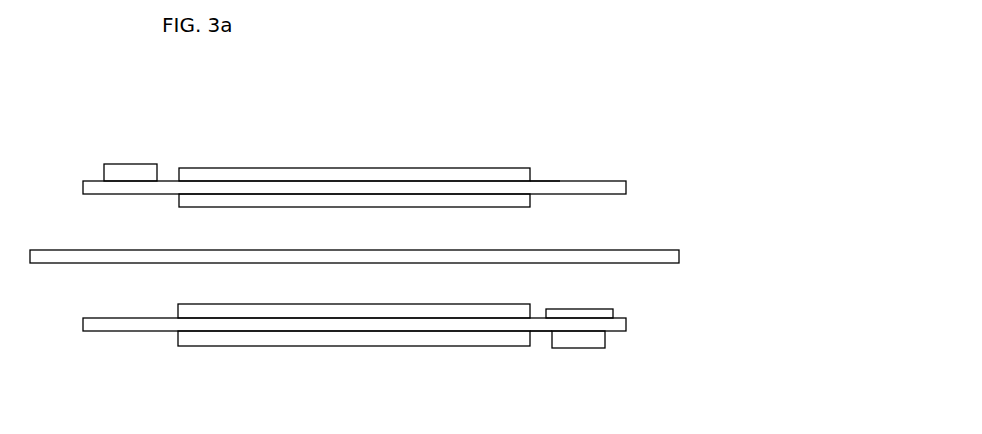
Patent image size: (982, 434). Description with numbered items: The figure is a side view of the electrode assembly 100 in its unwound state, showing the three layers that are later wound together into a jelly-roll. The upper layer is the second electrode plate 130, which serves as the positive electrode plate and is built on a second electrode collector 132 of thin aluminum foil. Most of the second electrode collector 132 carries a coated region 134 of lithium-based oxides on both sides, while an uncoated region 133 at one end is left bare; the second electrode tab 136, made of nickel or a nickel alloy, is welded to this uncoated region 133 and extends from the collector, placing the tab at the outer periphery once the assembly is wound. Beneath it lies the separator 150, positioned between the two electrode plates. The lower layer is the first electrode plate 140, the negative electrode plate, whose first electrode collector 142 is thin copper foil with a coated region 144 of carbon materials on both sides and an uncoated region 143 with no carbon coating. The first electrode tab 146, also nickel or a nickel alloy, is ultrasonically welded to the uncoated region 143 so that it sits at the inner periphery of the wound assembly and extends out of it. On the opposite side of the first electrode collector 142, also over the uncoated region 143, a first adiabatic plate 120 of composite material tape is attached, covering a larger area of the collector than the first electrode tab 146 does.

The electrode assembly 100 is at (741, 140).
The second electrode plate 130 is at (591, 153).
The second electrode collector 132 is at (626, 188).
The uncoated region 133 is at (543, 180).
The coated region 134 is at (257, 173).
The second electrode tab 136 is at (133, 170).
The separator 150 is at (632, 255).
The first electrode plate 140 is at (644, 370).
The first electrode collector 142 is at (627, 325).
The uncoated region 143 is at (543, 333).
The coated region 144 is at (472, 346).
The first electrode tab 146 is at (585, 348).
The first adiabatic plate 120 is at (607, 311).